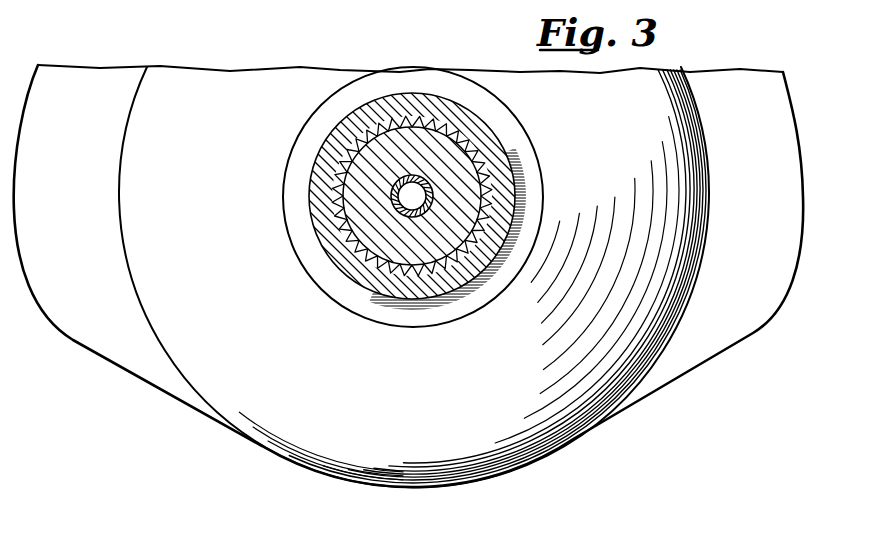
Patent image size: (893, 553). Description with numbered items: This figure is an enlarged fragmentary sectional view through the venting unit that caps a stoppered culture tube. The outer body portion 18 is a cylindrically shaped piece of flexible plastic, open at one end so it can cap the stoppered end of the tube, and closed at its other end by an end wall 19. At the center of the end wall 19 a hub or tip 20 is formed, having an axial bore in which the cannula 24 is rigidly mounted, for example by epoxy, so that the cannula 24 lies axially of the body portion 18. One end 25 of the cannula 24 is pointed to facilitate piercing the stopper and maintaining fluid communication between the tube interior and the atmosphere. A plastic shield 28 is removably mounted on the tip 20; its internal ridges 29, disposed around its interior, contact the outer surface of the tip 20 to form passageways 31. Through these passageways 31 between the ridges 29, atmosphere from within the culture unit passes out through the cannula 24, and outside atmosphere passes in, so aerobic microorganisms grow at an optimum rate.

The body portion 18 is at (707, 168).
The end wall 19 is at (192, 294).
The hub or tip 20 is at (363, 242).
The cannula 24 is at (392, 198).
The end 25 is at (410, 36).
The plastic shield 28 is at (483, 133).
The internal ridges 29 is at (338, 162).
The passageways 31 is at (408, 93).